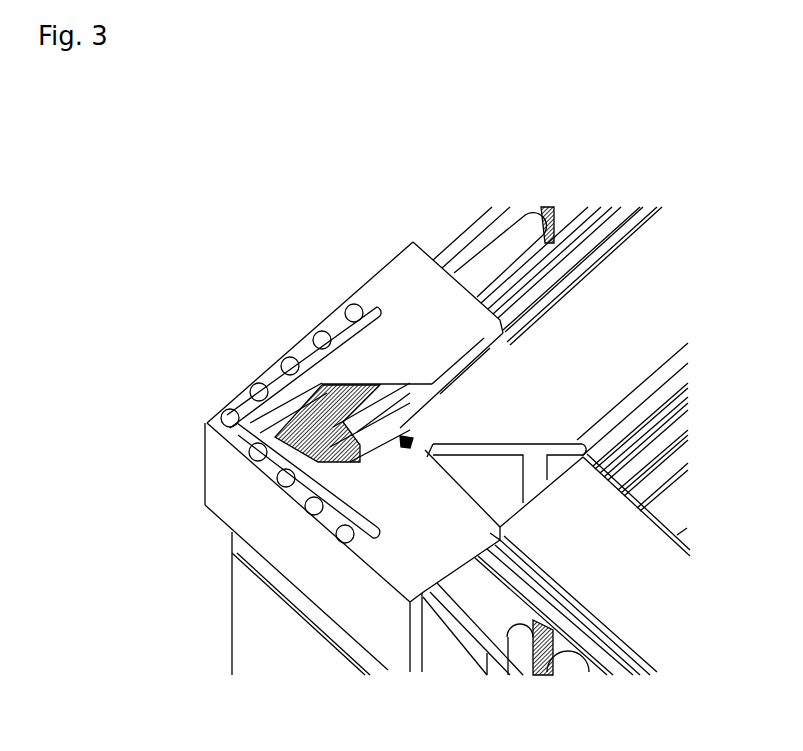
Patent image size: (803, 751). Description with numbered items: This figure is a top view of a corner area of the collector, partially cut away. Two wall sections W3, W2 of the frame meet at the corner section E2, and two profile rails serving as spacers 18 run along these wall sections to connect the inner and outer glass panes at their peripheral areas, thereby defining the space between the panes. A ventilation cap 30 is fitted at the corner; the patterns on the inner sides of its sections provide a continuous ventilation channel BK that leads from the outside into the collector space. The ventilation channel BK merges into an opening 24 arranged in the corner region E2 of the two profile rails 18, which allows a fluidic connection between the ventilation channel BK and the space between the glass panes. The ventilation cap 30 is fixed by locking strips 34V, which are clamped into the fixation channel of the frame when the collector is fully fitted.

The spacer 18 is at (463, 397).
The opening 24 is at (403, 438).
The ventilation cap 30 is at (266, 374).
The ventilation channel BK is at (318, 328).
The corner section E2 is at (188, 383).
The wall section W3 is at (214, 556).
The wall section W2 is at (255, 642).
The locking strip 34V is at (497, 602).